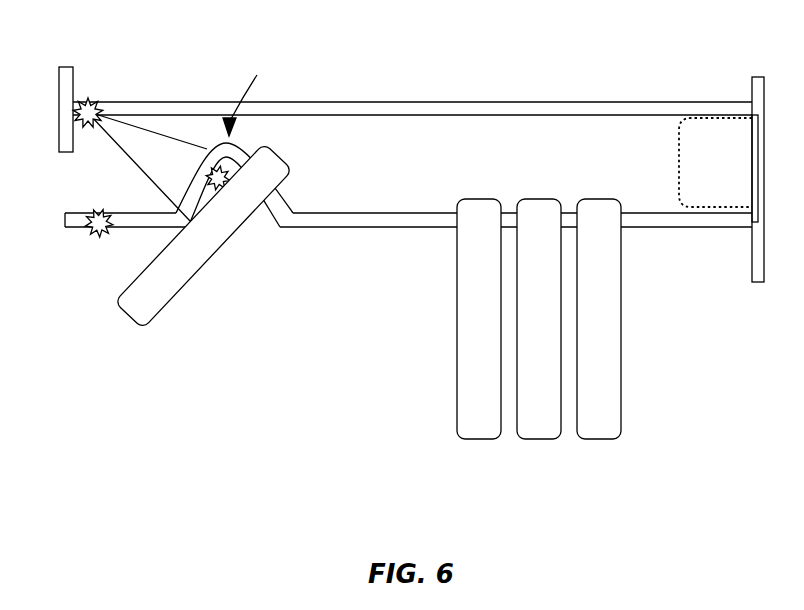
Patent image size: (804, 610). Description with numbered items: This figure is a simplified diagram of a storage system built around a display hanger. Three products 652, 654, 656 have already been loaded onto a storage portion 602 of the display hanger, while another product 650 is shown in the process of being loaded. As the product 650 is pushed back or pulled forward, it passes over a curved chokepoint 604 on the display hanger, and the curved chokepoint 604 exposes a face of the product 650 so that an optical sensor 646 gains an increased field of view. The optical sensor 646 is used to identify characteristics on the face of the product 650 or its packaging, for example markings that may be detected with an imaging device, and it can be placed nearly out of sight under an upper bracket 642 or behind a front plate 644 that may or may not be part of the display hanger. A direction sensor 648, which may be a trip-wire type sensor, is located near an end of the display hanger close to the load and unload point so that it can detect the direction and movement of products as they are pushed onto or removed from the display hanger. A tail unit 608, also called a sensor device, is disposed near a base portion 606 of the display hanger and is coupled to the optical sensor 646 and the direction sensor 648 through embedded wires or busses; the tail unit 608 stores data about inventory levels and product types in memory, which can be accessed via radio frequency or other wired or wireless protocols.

The storage portion 602 is at (322, 218).
The curved chokepoint 604 is at (264, 97).
The base portion 606 is at (753, 263).
The tail unit 608 is at (702, 128).
The upper bracket 642 is at (429, 108).
The front plate 644 is at (70, 67).
The optical sensor 646 is at (90, 97).
The direction sensor 648 is at (97, 235).
The product 650 is at (278, 173).
The product 652 is at (473, 210).
The product 654 is at (540, 428).
The product 656 is at (590, 213).